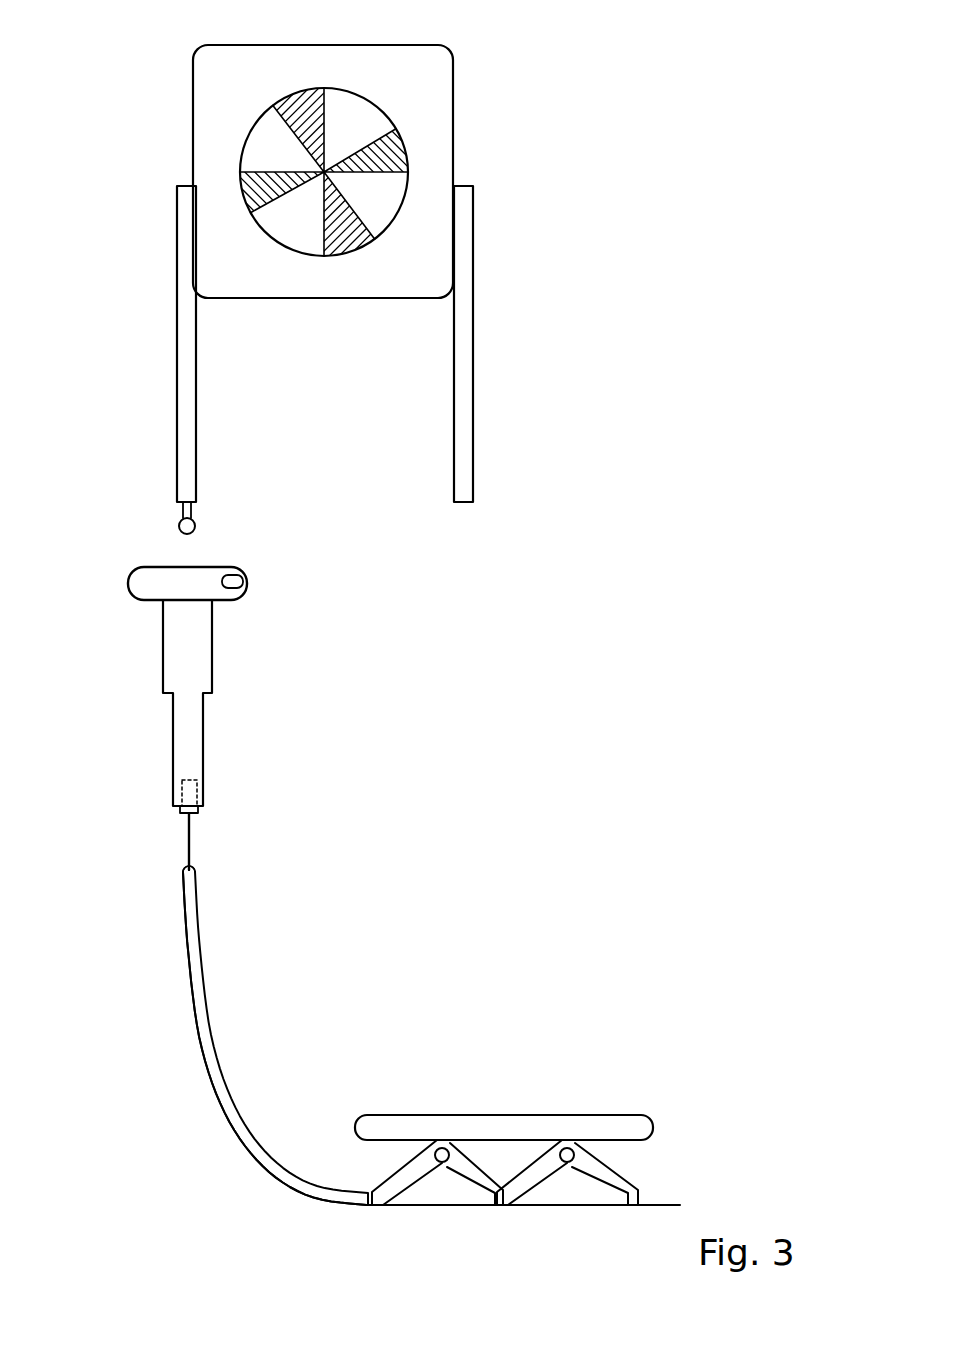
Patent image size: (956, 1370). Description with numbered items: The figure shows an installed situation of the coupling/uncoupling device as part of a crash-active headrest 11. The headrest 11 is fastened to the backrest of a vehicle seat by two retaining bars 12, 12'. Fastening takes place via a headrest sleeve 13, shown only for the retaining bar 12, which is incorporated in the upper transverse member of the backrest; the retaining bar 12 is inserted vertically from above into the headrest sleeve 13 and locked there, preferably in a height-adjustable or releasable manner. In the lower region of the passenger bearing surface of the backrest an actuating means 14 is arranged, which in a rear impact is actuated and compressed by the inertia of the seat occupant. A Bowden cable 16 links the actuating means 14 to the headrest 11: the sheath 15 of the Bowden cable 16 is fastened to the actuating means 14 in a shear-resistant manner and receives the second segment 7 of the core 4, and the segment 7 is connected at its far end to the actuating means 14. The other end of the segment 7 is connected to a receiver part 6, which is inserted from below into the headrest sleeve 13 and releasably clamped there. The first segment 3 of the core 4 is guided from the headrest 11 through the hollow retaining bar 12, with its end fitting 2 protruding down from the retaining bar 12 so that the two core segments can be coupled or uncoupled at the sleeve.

The crash-active headrest 11 is at (465, 135).
The retaining bar 12 is at (139, 344).
The retaining bar 12' is at (518, 344).
The first segment 3 is at (178, 508).
The end fitting 2 is at (196, 522).
The headrest sleeve 13 is at (182, 652).
The receiver part 6 is at (178, 808).
The core 4 is at (204, 852).
The second segment 7 is at (187, 840).
The Bowden cable 16 is at (225, 997).
The sheath 15 is at (193, 1038).
The actuating means 14 is at (502, 1105).